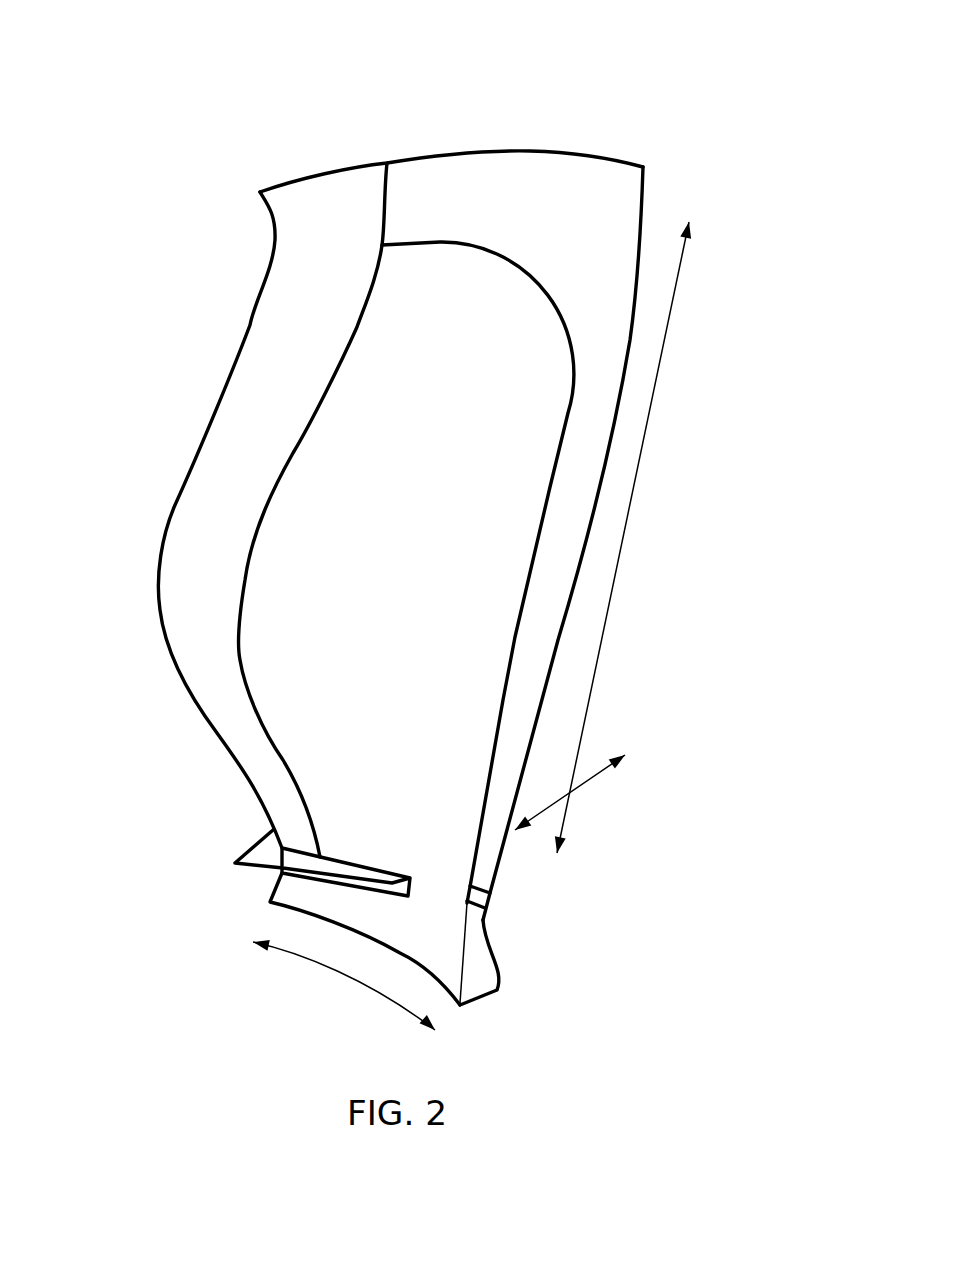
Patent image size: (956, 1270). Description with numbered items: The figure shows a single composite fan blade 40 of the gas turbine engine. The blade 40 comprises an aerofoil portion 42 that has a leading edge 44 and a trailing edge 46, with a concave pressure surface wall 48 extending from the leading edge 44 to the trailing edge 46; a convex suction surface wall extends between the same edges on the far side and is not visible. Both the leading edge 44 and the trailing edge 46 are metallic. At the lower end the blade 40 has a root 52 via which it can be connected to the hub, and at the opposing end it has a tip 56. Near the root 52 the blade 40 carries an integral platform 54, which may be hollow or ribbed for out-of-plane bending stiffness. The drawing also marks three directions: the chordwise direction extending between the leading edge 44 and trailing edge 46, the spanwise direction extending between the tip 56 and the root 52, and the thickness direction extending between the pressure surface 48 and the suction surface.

The fan blade 40 is at (705, 95).
The aerofoil portion 42 is at (330, 468).
The leading edge 44 is at (158, 580).
The trailing edge 46 is at (572, 573).
The concave pressure surface wall 48 is at (313, 708).
The root 52 is at (482, 963).
The integral platform 54 is at (238, 863).
The tip 56 is at (440, 152).